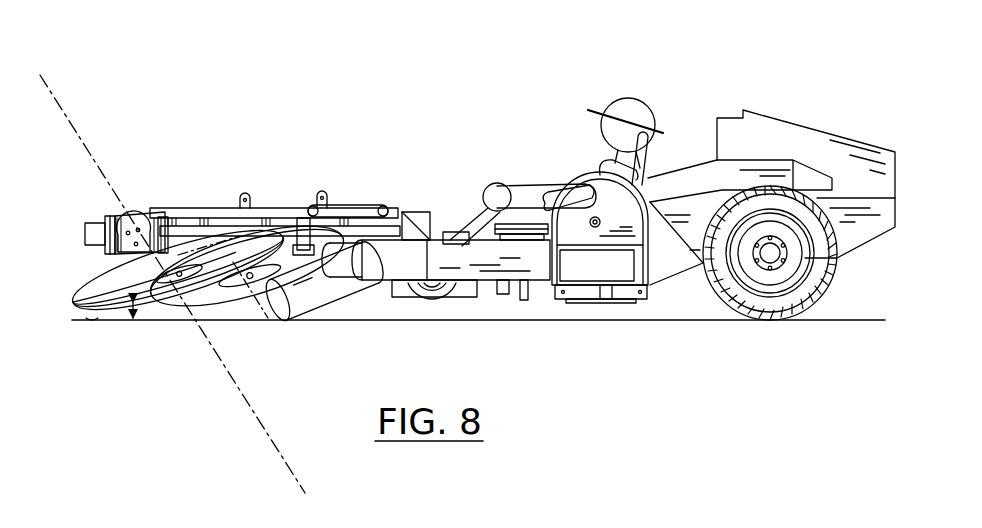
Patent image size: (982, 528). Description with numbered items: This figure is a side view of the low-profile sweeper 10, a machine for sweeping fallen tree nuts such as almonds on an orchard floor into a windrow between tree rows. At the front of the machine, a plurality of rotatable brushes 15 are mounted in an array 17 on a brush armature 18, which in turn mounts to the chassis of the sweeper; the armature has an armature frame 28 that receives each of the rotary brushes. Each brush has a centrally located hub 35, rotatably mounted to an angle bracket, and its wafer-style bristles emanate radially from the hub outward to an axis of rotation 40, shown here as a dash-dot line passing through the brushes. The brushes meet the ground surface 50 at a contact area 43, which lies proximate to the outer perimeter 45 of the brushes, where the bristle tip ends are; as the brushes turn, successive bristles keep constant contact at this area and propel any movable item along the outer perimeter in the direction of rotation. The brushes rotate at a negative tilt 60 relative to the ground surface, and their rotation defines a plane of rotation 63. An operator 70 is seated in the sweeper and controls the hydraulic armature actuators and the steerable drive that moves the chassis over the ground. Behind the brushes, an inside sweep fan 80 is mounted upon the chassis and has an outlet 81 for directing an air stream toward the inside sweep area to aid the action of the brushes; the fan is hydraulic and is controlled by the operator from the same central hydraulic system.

The low-profile sweeper 10 is at (490, 92).
The rotatable brushes 15 is at (50, 256).
The array 17 is at (107, 225).
The brush armature 18 is at (98, 232).
The armature frame 28 is at (217, 214).
The hub 35 is at (237, 288).
The axis of rotation 40 is at (58, 101).
The contact area 43 is at (90, 318).
The outer perimeter 45 is at (159, 287).
The ground surface 50 is at (836, 320).
The negative tilt 60 is at (130, 322).
The plane of rotation 63 is at (92, 322).
The operator 70 is at (610, 168).
The inside sweep fan 80 is at (545, 283).
The outlet 81 is at (283, 313).